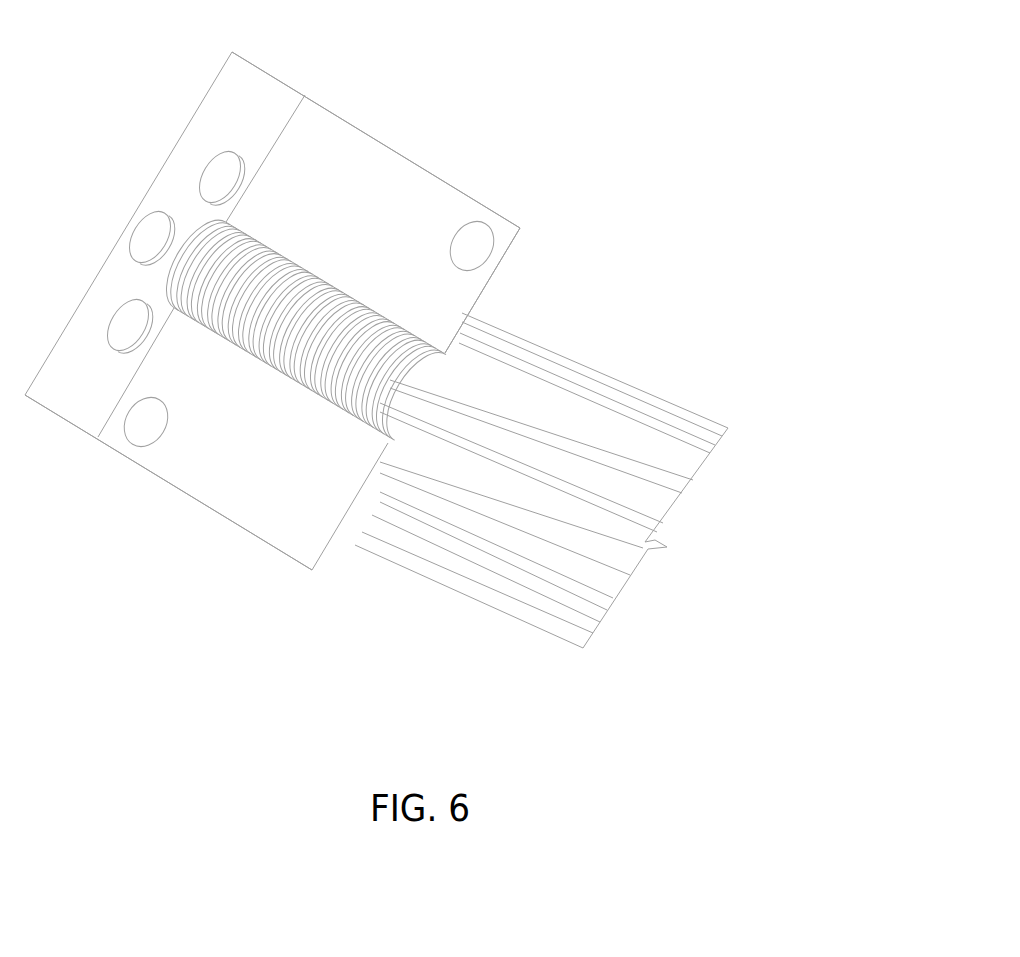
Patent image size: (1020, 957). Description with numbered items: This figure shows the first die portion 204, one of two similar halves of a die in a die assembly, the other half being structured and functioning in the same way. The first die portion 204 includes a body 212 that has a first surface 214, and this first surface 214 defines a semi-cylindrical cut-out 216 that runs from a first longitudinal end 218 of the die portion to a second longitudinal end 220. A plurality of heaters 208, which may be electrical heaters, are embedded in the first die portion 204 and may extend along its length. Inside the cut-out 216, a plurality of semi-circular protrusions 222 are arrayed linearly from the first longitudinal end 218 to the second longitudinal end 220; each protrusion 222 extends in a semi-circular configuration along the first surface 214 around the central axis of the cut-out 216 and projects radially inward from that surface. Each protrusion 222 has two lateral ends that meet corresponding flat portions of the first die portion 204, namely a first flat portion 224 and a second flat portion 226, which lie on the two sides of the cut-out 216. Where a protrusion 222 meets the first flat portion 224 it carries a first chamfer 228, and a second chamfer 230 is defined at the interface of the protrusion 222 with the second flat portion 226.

The first die portion 204 is at (378, 159).
The heaters 208 is at (218, 173).
The body 212 is at (270, 77).
The first surface 214 is at (205, 468).
The semi-cylindrical cut-out 216 is at (203, 296).
The first longitudinal end 218 is at (238, 75).
The second longitudinal end 220 is at (496, 272).
The semi-circular protrusions 222 is at (350, 375).
The first flat portion 224 is at (243, 500).
The second flat portion 226 is at (447, 212).
The first chamfer 228 is at (348, 413).
The second chamfer 230 is at (403, 335).